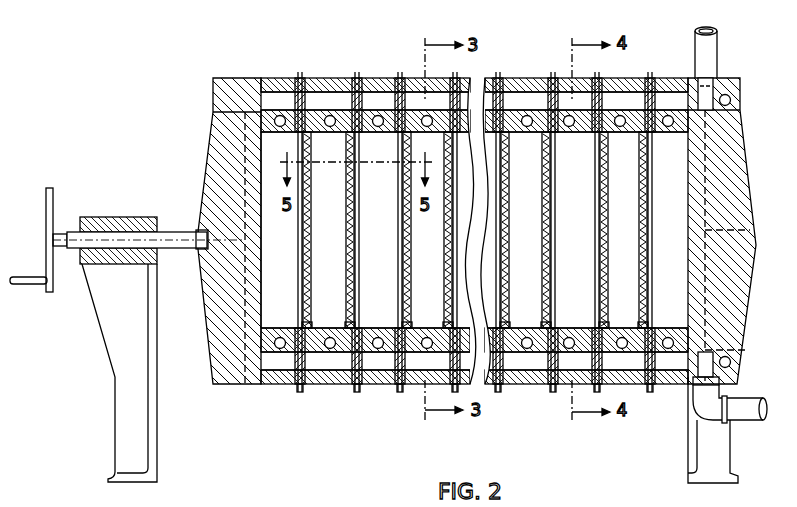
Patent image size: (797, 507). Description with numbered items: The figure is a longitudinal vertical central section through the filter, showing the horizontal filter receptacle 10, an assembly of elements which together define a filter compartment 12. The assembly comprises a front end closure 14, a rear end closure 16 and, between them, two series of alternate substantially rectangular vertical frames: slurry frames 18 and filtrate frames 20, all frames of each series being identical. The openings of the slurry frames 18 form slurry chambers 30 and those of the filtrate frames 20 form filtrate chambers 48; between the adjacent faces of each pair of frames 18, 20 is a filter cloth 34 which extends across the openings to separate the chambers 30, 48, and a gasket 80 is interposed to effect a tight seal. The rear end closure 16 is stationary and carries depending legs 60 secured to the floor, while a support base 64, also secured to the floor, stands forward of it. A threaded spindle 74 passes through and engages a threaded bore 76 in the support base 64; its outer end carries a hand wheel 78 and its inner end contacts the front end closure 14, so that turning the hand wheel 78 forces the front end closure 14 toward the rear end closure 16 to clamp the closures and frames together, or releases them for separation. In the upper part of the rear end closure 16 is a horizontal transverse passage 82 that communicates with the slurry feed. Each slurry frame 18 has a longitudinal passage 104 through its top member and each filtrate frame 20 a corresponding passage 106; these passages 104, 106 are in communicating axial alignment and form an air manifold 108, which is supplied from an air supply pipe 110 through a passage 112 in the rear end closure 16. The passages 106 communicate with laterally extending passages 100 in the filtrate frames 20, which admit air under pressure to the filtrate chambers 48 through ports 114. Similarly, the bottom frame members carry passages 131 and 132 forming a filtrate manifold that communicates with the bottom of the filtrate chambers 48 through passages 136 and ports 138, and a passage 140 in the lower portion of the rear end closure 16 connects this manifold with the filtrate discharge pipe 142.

The horizontal filter receptacle 10 is at (248, 53).
The filter compartment 12 is at (272, 151).
The front end closure 14 is at (229, 79).
The rear end closure 16 is at (724, 82).
The slurry frames 18 is at (274, 92).
The filtrate frames 20 is at (325, 80).
The slurry chambers 30 is at (474, 282).
The filter cloth 34 is at (300, 393).
The filtrate chambers 48 is at (475, 230).
The legs 60 is at (688, 447).
The support base 64 is at (158, 402).
The threaded spindle 74 is at (163, 230).
The threaded bore 76 is at (125, 232).
The hand wheel 78 is at (49, 188).
The gasket 80 is at (303, 385).
The horizontal transversely extending passage 82 is at (731, 100).
The laterally extending passage 100 is at (330, 127).
The passage 104 is at (272, 98).
The passage 106 is at (330, 98).
The air manifold 108 is at (384, 78).
The air supply pipe 110 is at (717, 46).
The passage 112 is at (700, 110).
The ports 114 is at (337, 127).
The passage 131 is at (285, 362).
The passage 132 is at (333, 366).
The passages 136 is at (326, 338).
The ports 138 is at (334, 326).
The passage 140 is at (692, 378).
The filtrate discharge pipe 142 is at (752, 421).